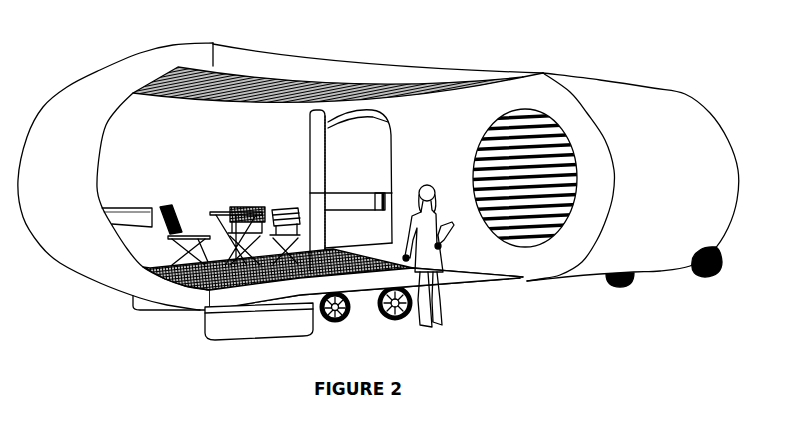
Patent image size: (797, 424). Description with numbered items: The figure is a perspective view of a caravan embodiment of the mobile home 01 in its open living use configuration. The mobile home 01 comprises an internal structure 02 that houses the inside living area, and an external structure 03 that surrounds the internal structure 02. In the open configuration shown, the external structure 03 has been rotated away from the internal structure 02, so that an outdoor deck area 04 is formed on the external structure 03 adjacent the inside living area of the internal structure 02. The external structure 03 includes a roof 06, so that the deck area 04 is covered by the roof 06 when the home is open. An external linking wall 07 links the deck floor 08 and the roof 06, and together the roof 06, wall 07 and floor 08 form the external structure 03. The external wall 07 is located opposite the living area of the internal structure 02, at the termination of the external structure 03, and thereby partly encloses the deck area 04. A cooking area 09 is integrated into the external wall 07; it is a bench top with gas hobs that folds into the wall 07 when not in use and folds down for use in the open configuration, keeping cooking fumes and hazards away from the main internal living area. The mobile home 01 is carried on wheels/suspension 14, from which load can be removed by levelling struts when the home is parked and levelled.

The mobile home 01 is at (540, 49).
The internal structure 02 is at (653, 88).
The external structure 03 is at (199, 47).
The deck area 04 is at (233, 137).
The roof 06 is at (282, 92).
The external linking wall 07 is at (100, 153).
The deck floor 08 is at (329, 251).
The cooking area 09 is at (134, 201).
The wheels/suspension 14 is at (347, 324).